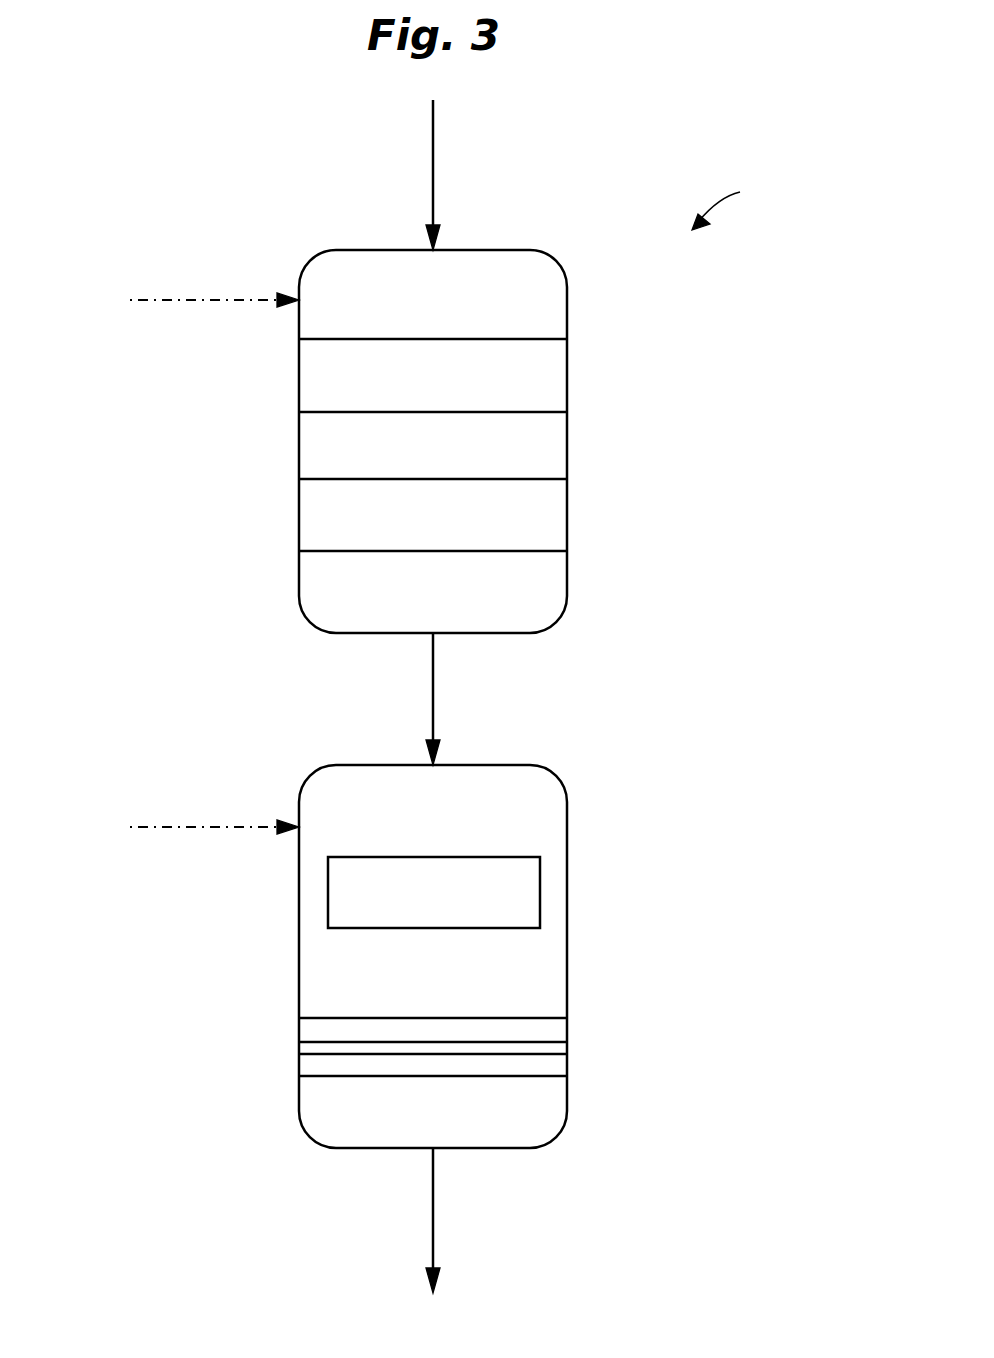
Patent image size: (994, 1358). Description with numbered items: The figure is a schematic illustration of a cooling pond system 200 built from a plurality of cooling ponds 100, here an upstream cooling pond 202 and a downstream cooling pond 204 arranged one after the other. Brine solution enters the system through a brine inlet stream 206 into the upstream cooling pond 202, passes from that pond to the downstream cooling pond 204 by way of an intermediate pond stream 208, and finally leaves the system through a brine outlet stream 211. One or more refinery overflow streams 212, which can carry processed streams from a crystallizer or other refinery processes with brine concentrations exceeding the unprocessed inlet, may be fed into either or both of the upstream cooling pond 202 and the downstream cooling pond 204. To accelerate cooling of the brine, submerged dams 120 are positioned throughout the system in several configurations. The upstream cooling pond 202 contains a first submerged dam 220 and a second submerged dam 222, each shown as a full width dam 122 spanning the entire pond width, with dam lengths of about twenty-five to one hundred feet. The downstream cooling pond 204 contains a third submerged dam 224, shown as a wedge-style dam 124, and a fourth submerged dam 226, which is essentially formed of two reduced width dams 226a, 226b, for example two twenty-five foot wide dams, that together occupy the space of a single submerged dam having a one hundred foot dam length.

The cooling pond 100 is at (502, 250).
The submerged dam 120 is at (552, 373).
The full width dam 122 is at (542, 339).
The wedge-style dam 124 is at (533, 857).
The cooling pond system 200 is at (741, 204).
The upstream cooling pond 202 is at (299, 455).
The downstream cooling pond 204 is at (299, 962).
The brine inlet stream 206 is at (434, 161).
The intermediate pond stream 208 is at (437, 693).
The brine outlet stream 211 is at (434, 1234).
The refinery overflow stream 212 is at (191, 562).
The first submerged dam 220 is at (299, 377).
The second submerged dam 222 is at (314, 524).
The third submerged dam 224 is at (328, 888).
The fourth submerged dam 226 is at (440, 1033).
The reduced width dam 226a is at (535, 1025).
The reduced width dam 226b is at (540, 1065).